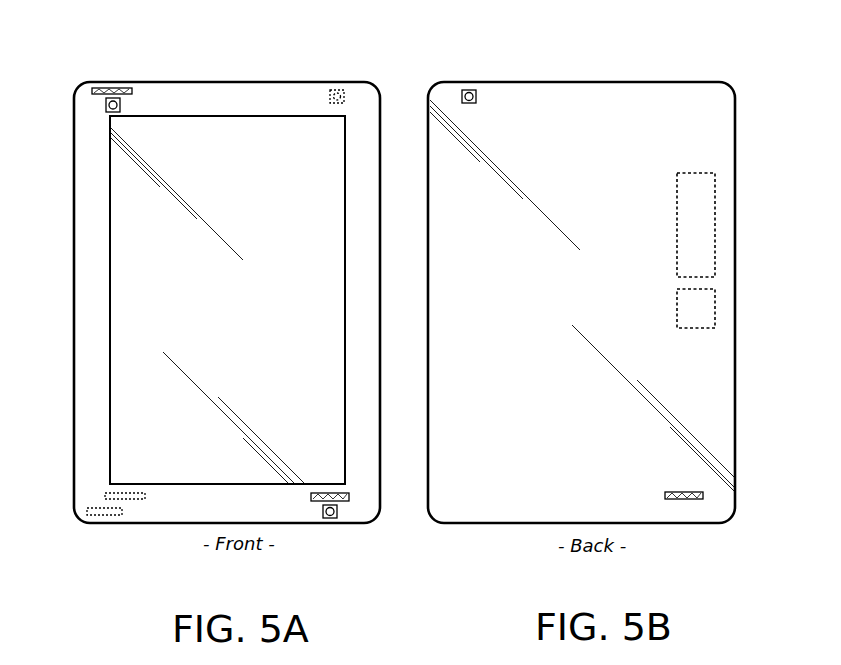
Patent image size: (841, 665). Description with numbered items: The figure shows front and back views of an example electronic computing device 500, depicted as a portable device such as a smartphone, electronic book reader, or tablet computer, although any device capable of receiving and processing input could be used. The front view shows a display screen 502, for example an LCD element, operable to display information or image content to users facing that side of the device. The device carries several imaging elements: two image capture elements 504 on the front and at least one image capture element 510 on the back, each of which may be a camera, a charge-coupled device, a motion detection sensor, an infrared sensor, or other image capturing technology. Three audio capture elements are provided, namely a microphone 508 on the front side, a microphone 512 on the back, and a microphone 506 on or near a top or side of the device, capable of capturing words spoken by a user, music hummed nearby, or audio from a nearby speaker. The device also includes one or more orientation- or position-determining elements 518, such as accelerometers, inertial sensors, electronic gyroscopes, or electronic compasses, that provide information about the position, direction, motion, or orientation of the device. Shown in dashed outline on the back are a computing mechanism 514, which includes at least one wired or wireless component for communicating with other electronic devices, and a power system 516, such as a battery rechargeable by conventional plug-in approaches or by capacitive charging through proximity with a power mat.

In FIG. 5A, the electronic computing device 500 is at (227, 302).
In FIG. 5B, the electronic computing device 500 is at (760, 90).
In FIG. 5A, the display screen 502 is at (110, 222).
In FIG. 5A, the image capture element 504 is at (106, 105).
In FIG. 5A, the microphone 506 is at (125, 88).
In FIG. 5A, the microphone 508 is at (345, 501).
In FIG. 5A, the image capture element 510 is at (333, 90).
In FIG. 5B, the image capture element 510 is at (465, 90).
In FIG. 5A, the microphone 512 is at (127, 499).
In FIG. 5B, the computing mechanism 514 is at (715, 240).
In FIG. 5B, the power system 516 is at (715, 312).
In FIG. 5A, the orientation- or position-determining element 518 is at (102, 515).
In FIG. 5B, the orientation- or position-determining element 518 is at (685, 499).